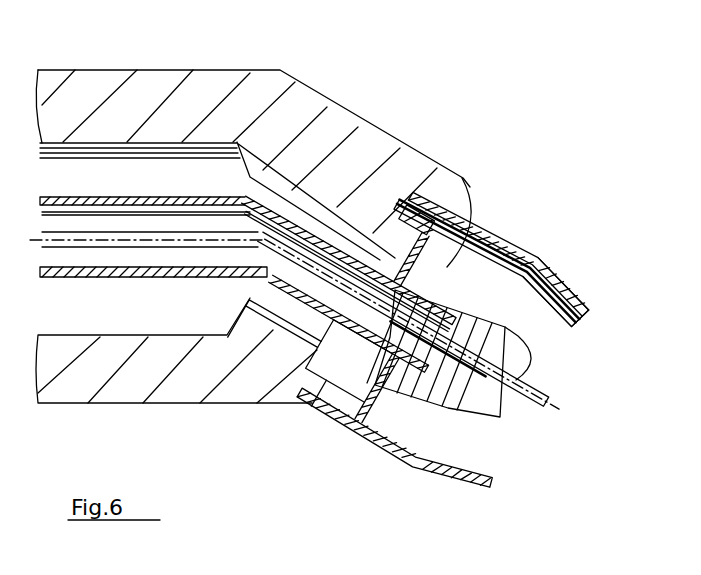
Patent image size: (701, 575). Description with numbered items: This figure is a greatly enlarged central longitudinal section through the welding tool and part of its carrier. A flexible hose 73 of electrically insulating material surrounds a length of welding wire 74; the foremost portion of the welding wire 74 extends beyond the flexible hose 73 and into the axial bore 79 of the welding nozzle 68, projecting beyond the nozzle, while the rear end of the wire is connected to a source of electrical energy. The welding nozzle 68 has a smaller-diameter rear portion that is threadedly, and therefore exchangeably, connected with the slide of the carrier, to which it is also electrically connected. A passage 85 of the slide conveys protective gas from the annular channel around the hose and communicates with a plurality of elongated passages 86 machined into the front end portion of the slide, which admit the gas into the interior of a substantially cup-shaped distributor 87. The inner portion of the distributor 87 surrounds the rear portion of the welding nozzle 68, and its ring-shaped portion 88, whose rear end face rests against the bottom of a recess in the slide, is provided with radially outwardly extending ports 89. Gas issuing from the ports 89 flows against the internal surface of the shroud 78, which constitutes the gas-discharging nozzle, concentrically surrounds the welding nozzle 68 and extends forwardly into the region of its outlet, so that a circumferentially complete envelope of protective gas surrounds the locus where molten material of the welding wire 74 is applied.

The flexible hose 73 is at (97, 197).
The passage 85 is at (163, 160).
The elongated passages 86 is at (288, 190).
The ports 89 is at (444, 242).
The ring-shaped portion 88 is at (462, 178).
The distributor 87 is at (517, 247).
The shroud 78 is at (520, 240).
The welding nozzle 68 is at (515, 340).
The axial bore 79 is at (533, 358).
The welding wire 74 is at (533, 408).